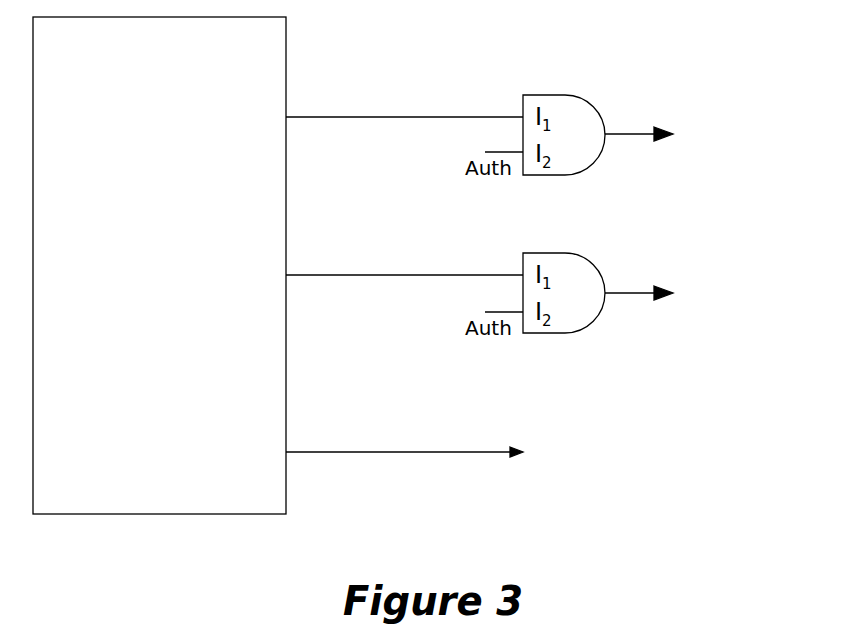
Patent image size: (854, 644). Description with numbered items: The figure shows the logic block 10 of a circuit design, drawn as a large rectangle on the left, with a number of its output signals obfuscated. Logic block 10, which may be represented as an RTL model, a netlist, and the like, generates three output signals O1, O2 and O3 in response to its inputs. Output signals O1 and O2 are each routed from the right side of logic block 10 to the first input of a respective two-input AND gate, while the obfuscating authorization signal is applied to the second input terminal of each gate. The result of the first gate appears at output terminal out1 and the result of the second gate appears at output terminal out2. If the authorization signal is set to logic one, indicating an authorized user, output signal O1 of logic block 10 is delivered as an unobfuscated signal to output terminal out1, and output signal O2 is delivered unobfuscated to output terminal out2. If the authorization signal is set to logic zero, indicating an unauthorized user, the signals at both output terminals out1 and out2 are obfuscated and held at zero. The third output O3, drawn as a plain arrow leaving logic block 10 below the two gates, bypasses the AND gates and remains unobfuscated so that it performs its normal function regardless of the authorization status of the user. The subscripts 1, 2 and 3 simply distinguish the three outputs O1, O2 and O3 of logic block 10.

The logic block 10 is at (142, 343).
The output O1 of logic block 1 is at (404, 98).
The output O2 of logic block 2 is at (404, 258).
The output O3 of logic block 3 is at (404, 434).
The output signal O1 is at (404, 98).
The output signal O2 is at (404, 258).
The output signal O3 is at (404, 434).
The output terminal Out1 out1 is at (671, 136).
The output terminal Out2 out2 is at (671, 295).